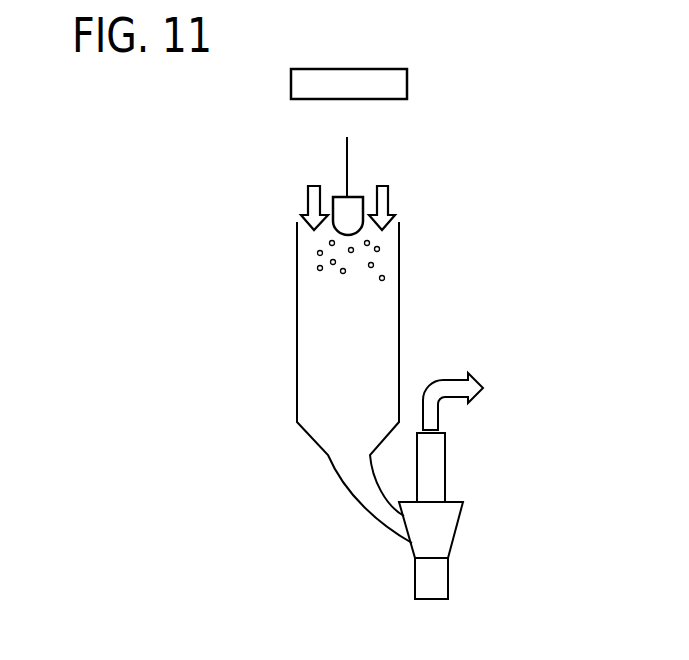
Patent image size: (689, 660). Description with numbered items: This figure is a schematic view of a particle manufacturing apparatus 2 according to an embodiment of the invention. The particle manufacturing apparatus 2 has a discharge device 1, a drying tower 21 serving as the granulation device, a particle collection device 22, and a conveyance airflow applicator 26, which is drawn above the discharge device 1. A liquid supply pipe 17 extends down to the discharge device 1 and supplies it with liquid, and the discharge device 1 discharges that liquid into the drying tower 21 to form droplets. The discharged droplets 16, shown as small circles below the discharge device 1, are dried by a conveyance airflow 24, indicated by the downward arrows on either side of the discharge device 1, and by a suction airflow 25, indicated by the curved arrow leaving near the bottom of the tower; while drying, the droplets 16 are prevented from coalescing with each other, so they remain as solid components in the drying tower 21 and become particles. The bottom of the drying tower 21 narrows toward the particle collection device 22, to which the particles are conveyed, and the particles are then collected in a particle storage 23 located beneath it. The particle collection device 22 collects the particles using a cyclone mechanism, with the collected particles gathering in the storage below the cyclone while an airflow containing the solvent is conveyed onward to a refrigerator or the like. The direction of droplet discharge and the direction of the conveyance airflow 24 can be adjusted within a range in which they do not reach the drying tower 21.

The conveyance airflow applicator 26 is at (360, 68).
The particle manufacturing apparatus 2 is at (443, 104).
The drying tower 21 is at (400, 281).
The liquid supply pipe 17 is at (349, 156).
The discharge device 1 is at (341, 193).
The conveyance airflow 24 is at (306, 208).
The droplets 16 is at (343, 279).
The suction airflow 25 is at (454, 377).
The particle collection device 22 is at (461, 525).
The particle storage 23 is at (414, 585).